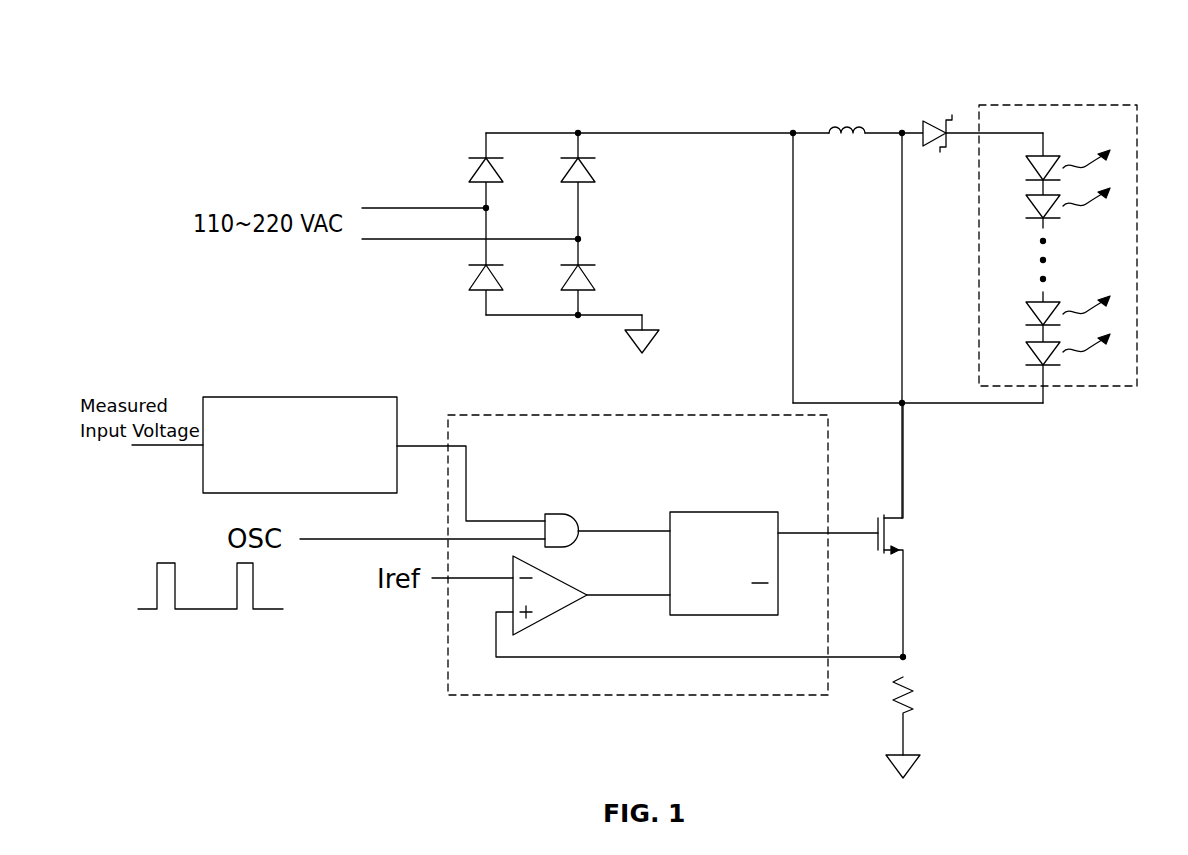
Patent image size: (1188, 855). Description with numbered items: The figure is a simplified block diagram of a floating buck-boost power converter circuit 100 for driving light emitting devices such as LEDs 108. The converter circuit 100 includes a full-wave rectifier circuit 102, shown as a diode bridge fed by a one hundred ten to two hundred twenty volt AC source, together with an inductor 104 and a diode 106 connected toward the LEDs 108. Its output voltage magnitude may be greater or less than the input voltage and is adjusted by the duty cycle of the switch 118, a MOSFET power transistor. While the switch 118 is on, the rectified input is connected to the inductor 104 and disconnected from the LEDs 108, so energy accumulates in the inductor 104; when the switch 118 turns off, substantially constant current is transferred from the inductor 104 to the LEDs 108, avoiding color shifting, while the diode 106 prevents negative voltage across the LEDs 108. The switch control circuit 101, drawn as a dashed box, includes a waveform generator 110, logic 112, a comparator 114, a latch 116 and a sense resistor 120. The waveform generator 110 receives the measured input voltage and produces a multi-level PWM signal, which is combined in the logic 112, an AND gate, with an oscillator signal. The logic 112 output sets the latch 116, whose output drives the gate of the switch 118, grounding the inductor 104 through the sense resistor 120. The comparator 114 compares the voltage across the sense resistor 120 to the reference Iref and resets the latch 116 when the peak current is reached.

The floating buck-boost power converter circuit 100 is at (633, 15).
The switch control circuit 101 is at (450, 415).
The full-wave rectifier circuit 102 is at (600, 218).
The inductor 104 is at (855, 128).
The diode 106 is at (930, 115).
The LEDs 108 is at (1137, 105).
The waveform generator 110 is at (305, 397).
The logic 112 is at (567, 512).
The comparator 114 is at (575, 590).
The latch 116 is at (730, 512).
The switch 118 is at (905, 538).
The sense resistor 120 is at (912, 690).